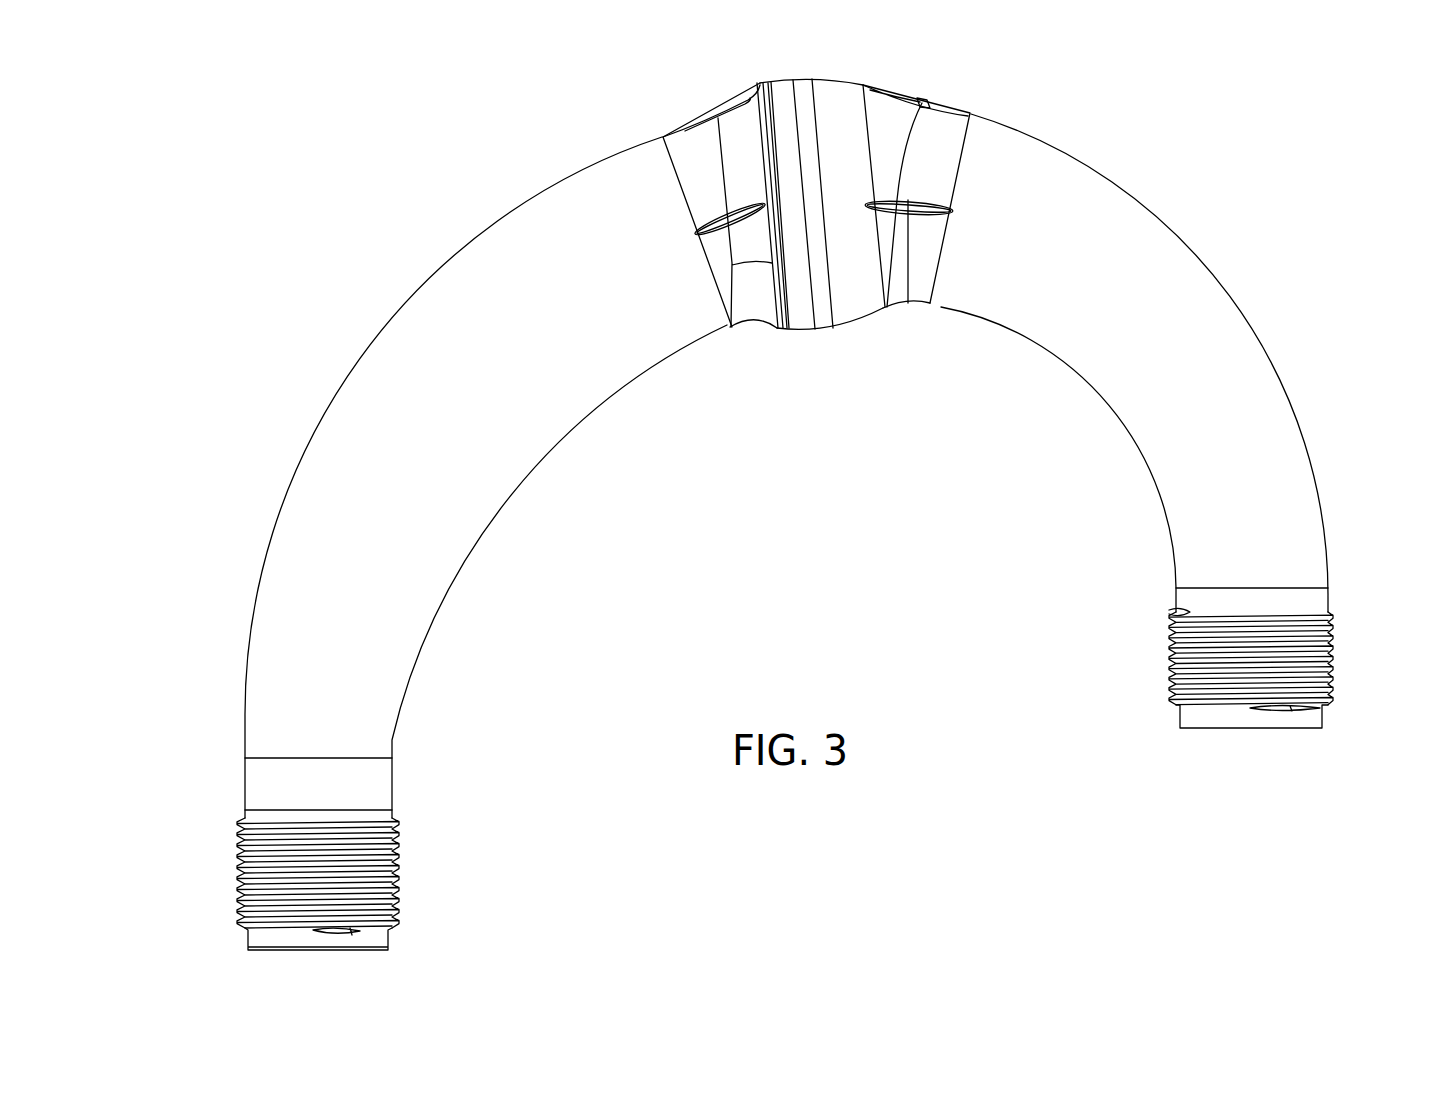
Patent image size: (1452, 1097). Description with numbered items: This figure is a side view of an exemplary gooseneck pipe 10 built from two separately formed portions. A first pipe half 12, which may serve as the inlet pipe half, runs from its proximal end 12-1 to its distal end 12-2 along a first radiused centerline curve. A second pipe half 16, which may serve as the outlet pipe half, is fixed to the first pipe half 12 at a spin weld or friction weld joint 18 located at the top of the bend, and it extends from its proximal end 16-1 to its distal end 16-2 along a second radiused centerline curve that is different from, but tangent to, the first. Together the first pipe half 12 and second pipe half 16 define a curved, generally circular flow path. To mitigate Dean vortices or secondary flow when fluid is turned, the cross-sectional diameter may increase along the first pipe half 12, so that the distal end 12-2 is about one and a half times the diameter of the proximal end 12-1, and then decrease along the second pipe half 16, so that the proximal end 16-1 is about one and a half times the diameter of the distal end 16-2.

The gooseneck pipe 10 is at (1273, 138).
The first pipe half 12 is at (387, 389).
The proximal end of the first pipe half 12-1 is at (245, 927).
The distal end of the first pipe half 12-2 is at (767, 82).
The second pipe half 16 is at (1220, 319).
The proximal end of the second pipe half 16-1 is at (840, 80).
The distal end of the second pipe half 16-2 is at (1333, 690).
The spin weld or friction weld joint 18 is at (838, 357).